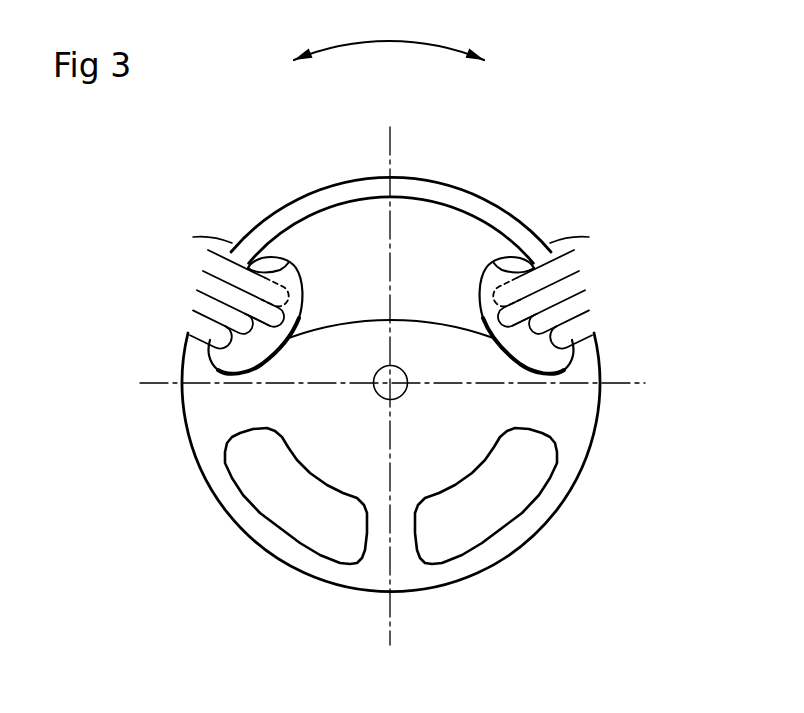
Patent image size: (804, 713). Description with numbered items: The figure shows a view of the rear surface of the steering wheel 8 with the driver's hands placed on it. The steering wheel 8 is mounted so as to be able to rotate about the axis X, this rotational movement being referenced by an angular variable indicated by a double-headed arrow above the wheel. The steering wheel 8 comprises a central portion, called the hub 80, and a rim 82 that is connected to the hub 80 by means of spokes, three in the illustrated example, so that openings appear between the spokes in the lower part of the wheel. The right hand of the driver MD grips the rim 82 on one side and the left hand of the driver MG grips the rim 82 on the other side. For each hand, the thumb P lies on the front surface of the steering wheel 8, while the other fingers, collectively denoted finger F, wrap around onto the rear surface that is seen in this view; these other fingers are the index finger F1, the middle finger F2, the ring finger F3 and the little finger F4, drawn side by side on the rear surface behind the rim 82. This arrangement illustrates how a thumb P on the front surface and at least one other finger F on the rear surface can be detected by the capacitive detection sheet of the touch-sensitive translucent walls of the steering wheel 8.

The steering wheel 8 is at (500, 171).
The rim 82 is at (362, 165).
The hub 80 is at (439, 431).
The axis X is at (390, 383).
The right hand of the driver MD is at (176, 281).
The left hand of the driver MG is at (604, 281).
The thumb P is at (283, 268).
The other finger F is at (270, 318).
The index finger F1 is at (391, 278).
The middle finger F2 is at (391, 300).
The ring finger F3 is at (391, 313).
The little finger F4 is at (391, 330).